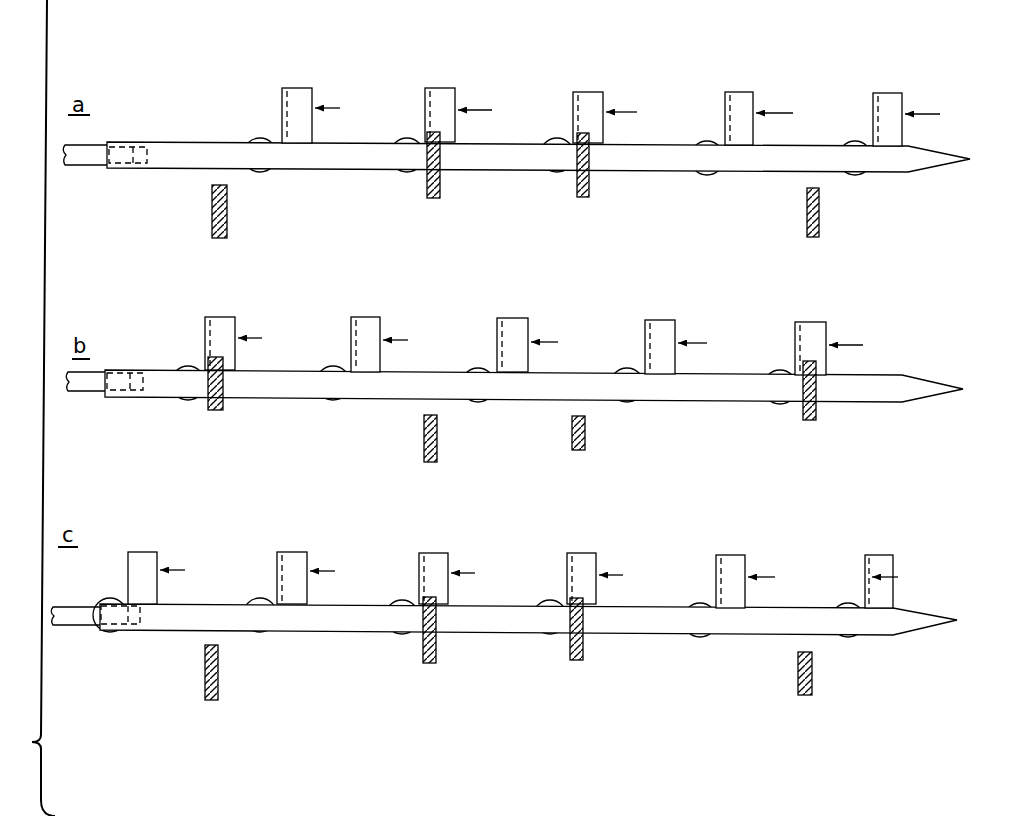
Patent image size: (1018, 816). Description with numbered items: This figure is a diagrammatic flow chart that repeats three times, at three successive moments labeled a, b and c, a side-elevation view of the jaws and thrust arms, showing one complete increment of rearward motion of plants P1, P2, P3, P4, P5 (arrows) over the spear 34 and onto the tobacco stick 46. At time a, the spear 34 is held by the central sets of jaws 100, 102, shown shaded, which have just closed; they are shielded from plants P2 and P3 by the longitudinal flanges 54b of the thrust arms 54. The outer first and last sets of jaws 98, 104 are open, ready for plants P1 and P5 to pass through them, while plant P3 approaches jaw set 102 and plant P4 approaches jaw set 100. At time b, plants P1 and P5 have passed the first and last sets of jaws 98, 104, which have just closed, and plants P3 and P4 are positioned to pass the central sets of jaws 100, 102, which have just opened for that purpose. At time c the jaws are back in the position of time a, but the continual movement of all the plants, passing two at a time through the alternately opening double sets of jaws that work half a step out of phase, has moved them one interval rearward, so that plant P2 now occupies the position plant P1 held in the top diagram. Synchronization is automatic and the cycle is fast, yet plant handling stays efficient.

The spear 34 is at (930, 150).
The tobacco stick 46 is at (90, 150).
The thrust arms 54 is at (573, 92).
The longitudinal flanges 54b is at (592, 100).
The first set of jaws 98 is at (819, 215).
The central set of jaws 100 is at (589, 185).
The central set of jaws 102 is at (440, 182).
The last set of jaws 104 is at (227, 212).
The plant P1 is at (252, 133).
The plant P2 is at (405, 130).
The plant P3 is at (553, 134).
The plant P4 is at (697, 136).
The plant P5 is at (850, 136).